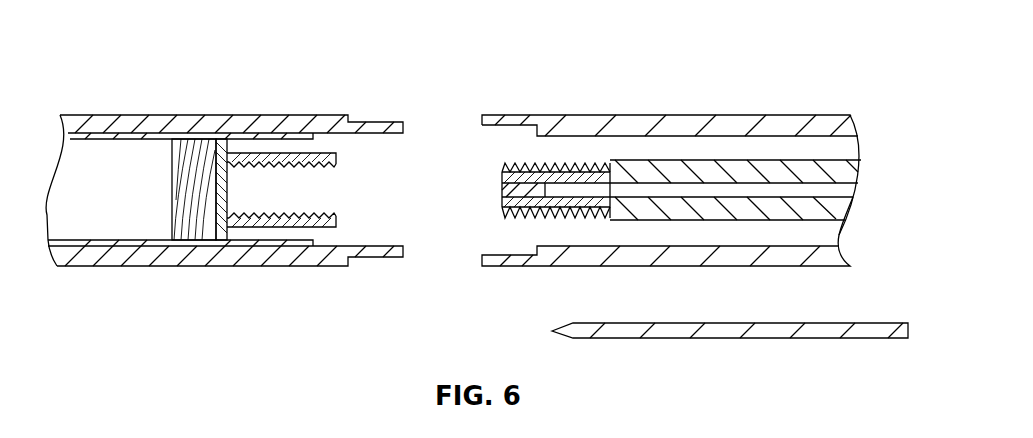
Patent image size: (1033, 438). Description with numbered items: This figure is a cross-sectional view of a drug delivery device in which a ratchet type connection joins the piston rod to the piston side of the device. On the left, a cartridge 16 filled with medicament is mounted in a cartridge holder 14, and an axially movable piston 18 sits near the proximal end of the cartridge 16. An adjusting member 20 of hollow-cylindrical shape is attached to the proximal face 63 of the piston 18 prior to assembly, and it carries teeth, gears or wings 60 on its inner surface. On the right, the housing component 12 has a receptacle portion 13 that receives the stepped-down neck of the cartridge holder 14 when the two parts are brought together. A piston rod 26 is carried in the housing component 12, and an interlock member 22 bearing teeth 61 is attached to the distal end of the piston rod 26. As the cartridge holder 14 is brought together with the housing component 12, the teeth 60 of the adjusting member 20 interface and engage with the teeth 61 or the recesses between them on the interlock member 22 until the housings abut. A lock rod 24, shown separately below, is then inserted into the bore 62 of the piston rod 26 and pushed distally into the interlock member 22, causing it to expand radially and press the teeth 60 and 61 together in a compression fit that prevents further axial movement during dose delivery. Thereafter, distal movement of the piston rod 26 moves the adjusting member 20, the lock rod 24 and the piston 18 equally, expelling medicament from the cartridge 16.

The housing component 12 is at (652, 125).
The receptacle portion 13 is at (372, 258).
The cartridge holder 14 is at (187, 125).
The cartridge 16 is at (103, 200).
The piston 18 is at (192, 190).
The adjusting member 20 is at (337, 161).
The interlock member 22 is at (513, 192).
The lock rod 24 is at (890, 332).
The piston rod 26 is at (720, 177).
The teeth 60 is at (323, 215).
The teeth 61 is at (530, 168).
The bore 62 is at (840, 190).
The proximal face 63 is at (217, 233).